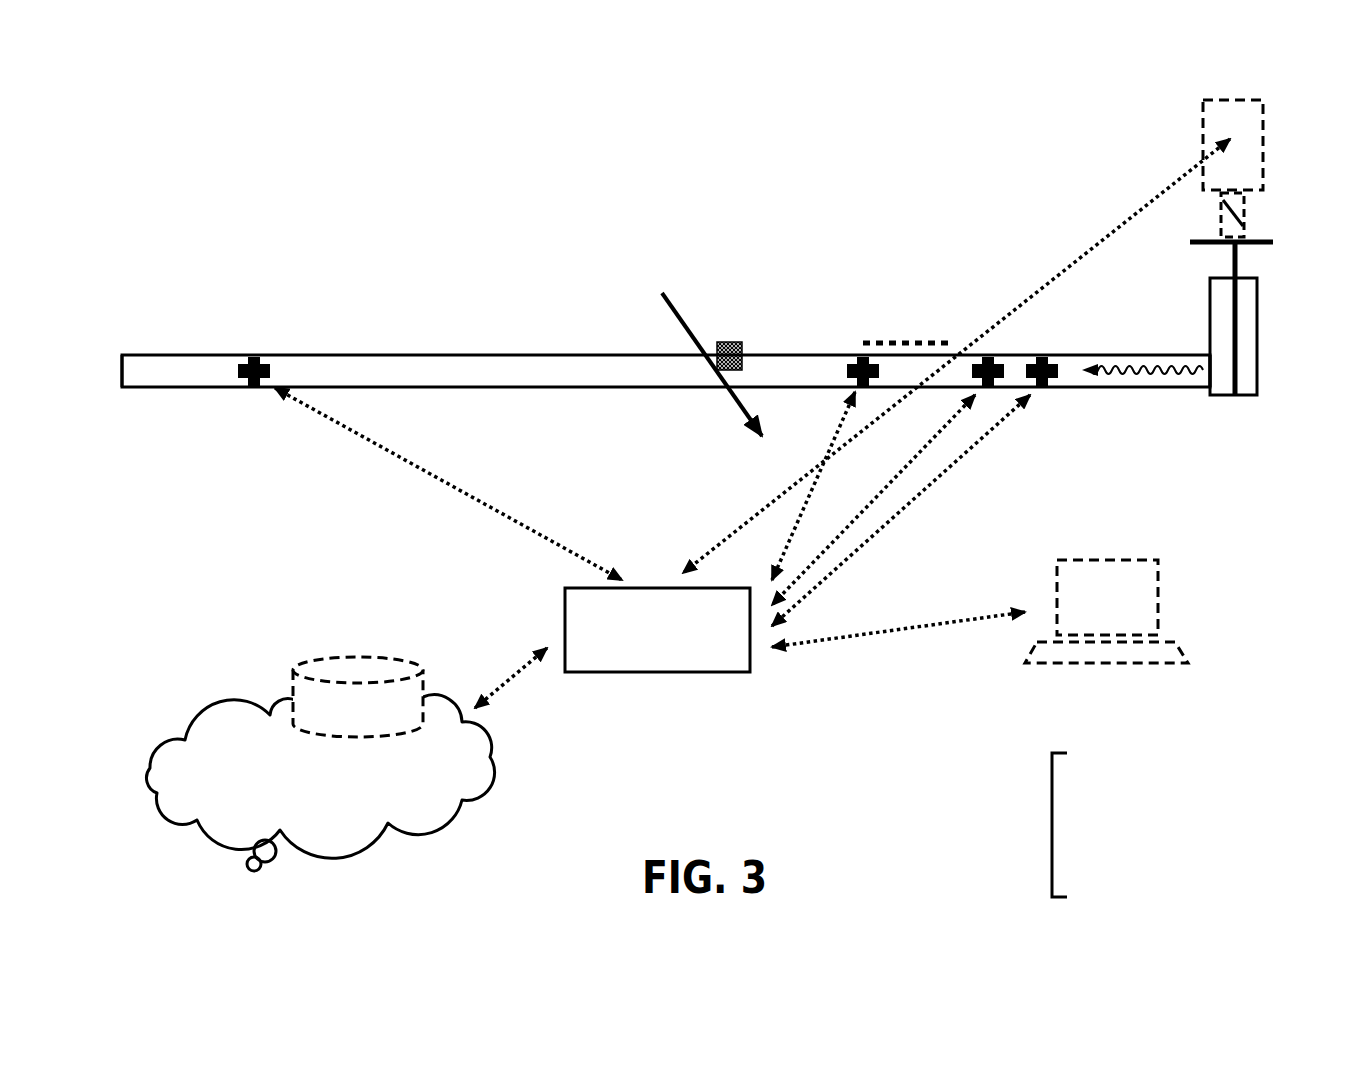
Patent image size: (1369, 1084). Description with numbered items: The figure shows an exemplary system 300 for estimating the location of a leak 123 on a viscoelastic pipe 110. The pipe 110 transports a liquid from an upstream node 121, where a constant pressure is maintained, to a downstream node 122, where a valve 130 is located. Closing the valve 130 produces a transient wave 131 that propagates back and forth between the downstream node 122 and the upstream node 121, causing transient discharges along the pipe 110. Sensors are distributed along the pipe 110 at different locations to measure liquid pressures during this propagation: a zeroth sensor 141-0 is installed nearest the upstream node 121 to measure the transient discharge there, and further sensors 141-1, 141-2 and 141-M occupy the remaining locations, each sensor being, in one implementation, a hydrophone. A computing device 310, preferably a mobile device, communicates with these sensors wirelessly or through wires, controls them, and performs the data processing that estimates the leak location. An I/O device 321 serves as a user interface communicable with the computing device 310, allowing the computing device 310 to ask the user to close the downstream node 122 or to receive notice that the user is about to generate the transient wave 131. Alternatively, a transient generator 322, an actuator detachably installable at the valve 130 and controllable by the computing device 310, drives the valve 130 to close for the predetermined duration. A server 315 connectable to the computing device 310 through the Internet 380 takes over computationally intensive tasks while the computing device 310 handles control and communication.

The pipe 110 is at (666, 331).
The upstream node 121 is at (112, 362).
The downstream node 122 is at (1206, 346).
The leak 123 is at (699, 350).
The valve 130 is at (1261, 318).
The transient wave 131 is at (1150, 381).
The zeroth sensor 141-0 is at (255, 391).
The sensor 141-1 is at (1047, 397).
The sensor 141-2 is at (933, 305).
The sensor 141-M is at (841, 305).
The system 300 is at (1052, 827).
The computing device 310 is at (586, 613).
The server 315 is at (348, 667).
The I/O device 321 is at (1141, 611).
The transient generator 322 is at (1217, 168).
The Internet 380 is at (320, 766).